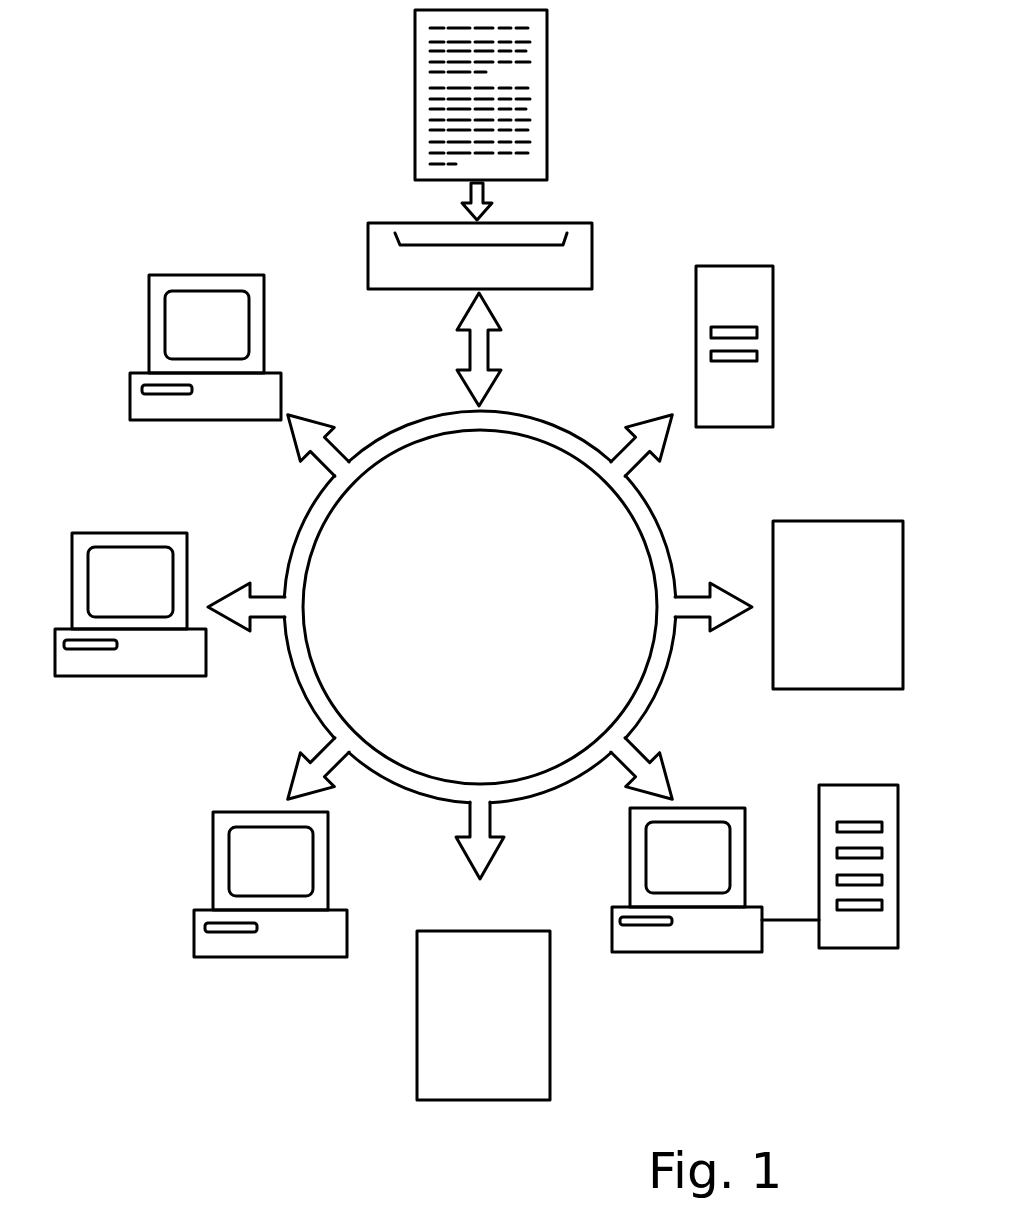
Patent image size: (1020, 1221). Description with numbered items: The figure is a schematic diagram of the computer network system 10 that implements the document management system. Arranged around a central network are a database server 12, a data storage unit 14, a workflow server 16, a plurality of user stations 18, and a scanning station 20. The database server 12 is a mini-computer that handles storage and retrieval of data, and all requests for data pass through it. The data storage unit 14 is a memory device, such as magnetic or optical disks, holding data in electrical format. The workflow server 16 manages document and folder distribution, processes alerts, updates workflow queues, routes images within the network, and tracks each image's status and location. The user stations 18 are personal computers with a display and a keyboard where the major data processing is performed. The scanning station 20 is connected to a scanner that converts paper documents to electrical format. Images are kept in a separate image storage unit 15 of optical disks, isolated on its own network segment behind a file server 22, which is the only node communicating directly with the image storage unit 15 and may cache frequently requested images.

The network system 10 is at (665, 198).
The database server 12 is at (773, 350).
The data storage unit 14 is at (493, 1023).
The image storage unit 15 is at (840, 790).
The workflow server 16 is at (844, 617).
The user station 18 is at (148, 344).
The scanning station 20 is at (412, 223).
The file server 22 is at (677, 947).